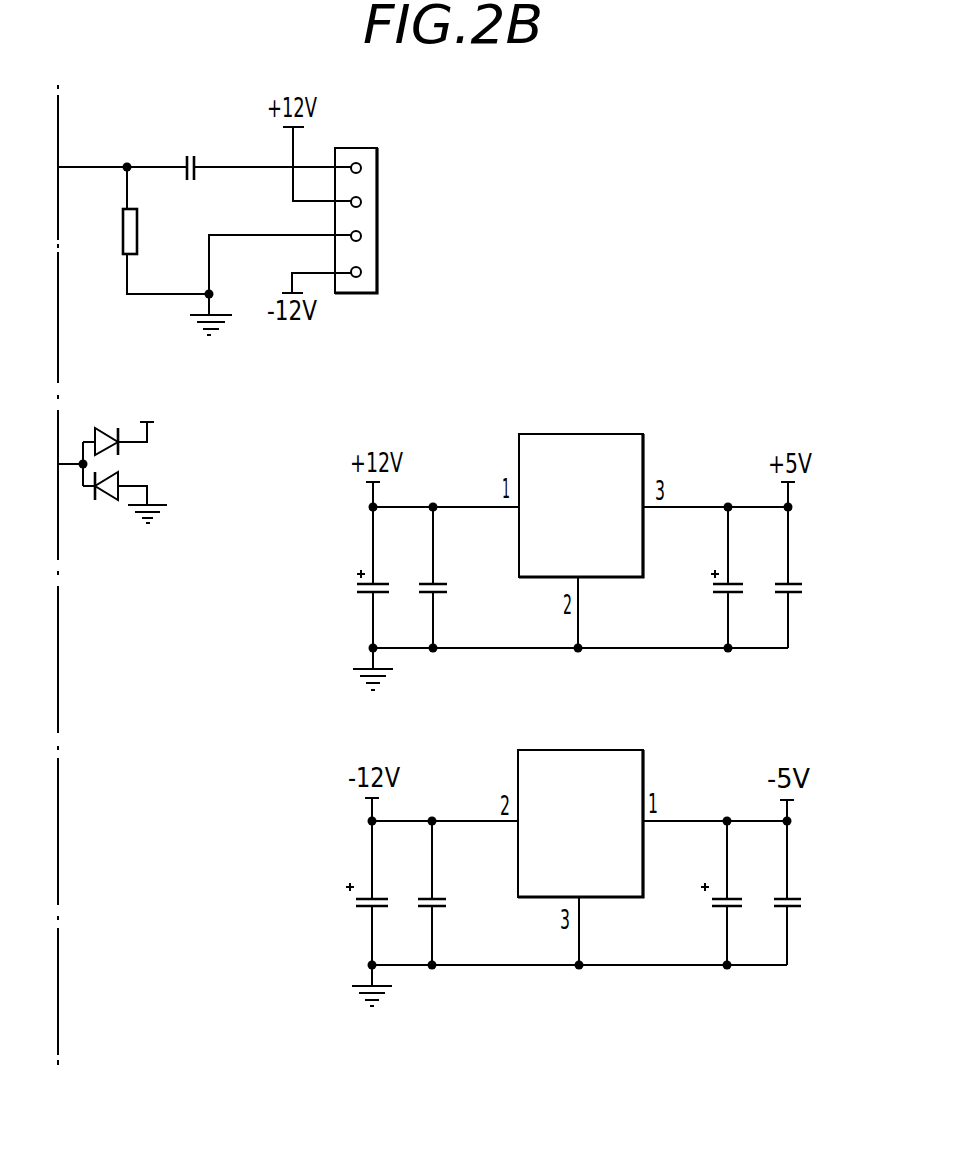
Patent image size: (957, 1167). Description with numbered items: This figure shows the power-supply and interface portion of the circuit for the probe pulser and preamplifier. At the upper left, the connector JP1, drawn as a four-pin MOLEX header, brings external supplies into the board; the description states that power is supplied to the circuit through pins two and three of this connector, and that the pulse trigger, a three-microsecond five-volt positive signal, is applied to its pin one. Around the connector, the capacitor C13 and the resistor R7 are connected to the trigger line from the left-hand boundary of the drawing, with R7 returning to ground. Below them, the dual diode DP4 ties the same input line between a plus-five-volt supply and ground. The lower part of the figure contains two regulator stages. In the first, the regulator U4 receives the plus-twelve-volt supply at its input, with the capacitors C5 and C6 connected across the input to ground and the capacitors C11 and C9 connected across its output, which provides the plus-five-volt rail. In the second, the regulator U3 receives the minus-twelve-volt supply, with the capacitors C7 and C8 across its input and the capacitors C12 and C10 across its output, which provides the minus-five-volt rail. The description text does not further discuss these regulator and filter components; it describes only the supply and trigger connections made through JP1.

The capacitor 1nF C13 is at (166, 163).
The resistor 10K R7 is at (168, 233).
The JPI connector JP1 is at (380, 223).
The dual diode BAV99 DP4 is at (156, 455).
The voltage regulator LM7805 U4 is at (581, 541).
The capacitor 10uF/16V C5 is at (309, 577).
The capacitor 0.1uF C6 is at (466, 577).
The capacitor 10uF/16V C11 is at (667, 577).
The capacitor 0.1uF C9 is at (824, 577).
The voltage regulator LM79L05 U3 is at (580, 857).
The capacitor 10uF/16V C7 is at (307, 893).
The capacitor 0.1uF C8 is at (469, 893).
The capacitor 10uF/16V C12 is at (666, 893).
The capacitor 0.1uF C10 is at (823, 893).